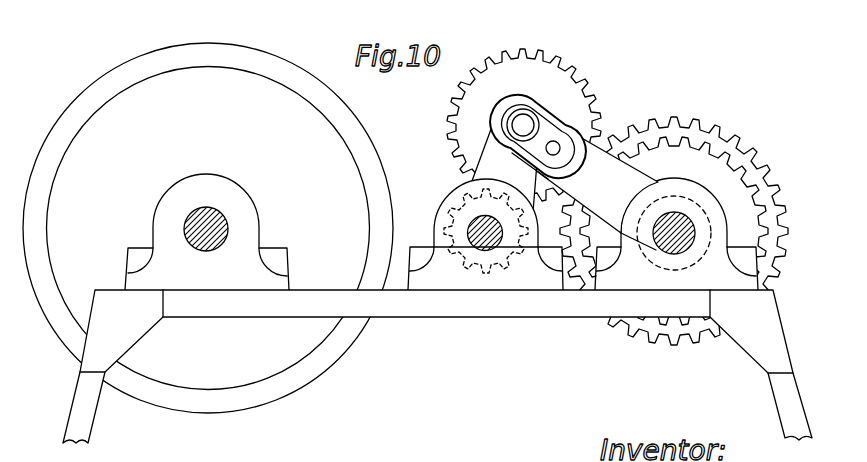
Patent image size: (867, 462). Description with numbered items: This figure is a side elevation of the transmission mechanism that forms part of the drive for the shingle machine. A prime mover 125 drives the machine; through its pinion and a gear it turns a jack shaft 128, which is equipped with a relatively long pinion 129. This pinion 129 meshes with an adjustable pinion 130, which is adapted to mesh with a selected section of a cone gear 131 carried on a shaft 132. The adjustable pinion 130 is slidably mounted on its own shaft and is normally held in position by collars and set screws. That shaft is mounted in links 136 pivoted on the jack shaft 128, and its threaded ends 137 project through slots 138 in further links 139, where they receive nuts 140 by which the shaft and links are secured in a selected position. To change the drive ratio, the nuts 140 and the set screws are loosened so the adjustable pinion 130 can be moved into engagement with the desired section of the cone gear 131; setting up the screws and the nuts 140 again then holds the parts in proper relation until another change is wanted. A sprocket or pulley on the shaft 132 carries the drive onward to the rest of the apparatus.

The prime mover 125 is at (100, 86).
The jack shaft 128 is at (478, 253).
The pinion 129 is at (452, 205).
The adjustable pinion 130 is at (539, 73).
The cone gear 131 is at (737, 141).
The shaft 132 is at (662, 247).
The links 136 is at (498, 160).
The threaded ends 137 is at (552, 127).
The slots 138 is at (585, 102).
The links 139 is at (605, 172).
The nuts 140 is at (530, 120).